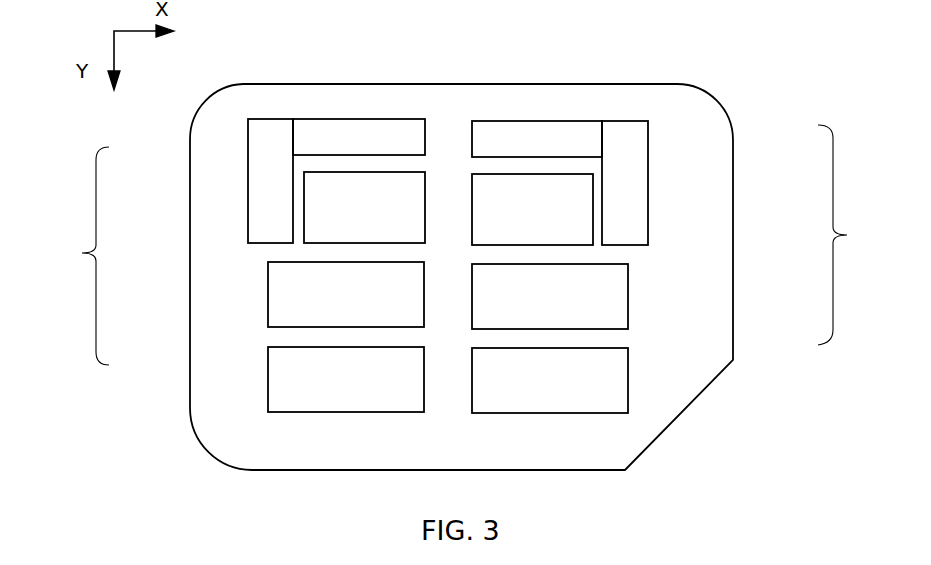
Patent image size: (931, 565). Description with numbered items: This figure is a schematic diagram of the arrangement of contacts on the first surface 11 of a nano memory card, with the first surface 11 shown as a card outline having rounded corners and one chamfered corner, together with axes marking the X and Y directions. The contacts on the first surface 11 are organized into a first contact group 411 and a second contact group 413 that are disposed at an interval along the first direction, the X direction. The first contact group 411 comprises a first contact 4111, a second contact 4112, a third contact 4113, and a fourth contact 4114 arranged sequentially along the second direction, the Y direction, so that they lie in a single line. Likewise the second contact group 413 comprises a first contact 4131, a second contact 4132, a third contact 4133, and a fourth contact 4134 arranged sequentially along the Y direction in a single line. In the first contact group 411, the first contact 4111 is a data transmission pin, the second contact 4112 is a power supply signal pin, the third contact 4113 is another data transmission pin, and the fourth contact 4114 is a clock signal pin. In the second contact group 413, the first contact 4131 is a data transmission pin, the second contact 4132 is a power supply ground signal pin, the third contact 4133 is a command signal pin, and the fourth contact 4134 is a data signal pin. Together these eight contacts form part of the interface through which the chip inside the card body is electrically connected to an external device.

The first surface 11 is at (248, 433).
The first contact group 411 is at (72, 256).
The first contact 4111 is at (248, 153).
The second contact 4112 is at (304, 213).
The third contact 4113 is at (268, 303).
The fourth contact 4114 is at (268, 379).
The second contact group 413 is at (852, 235).
The first contact 4131 is at (648, 139).
The second contact 4132 is at (593, 213).
The third contact 4133 is at (628, 302).
The fourth contact 4134 is at (628, 377).